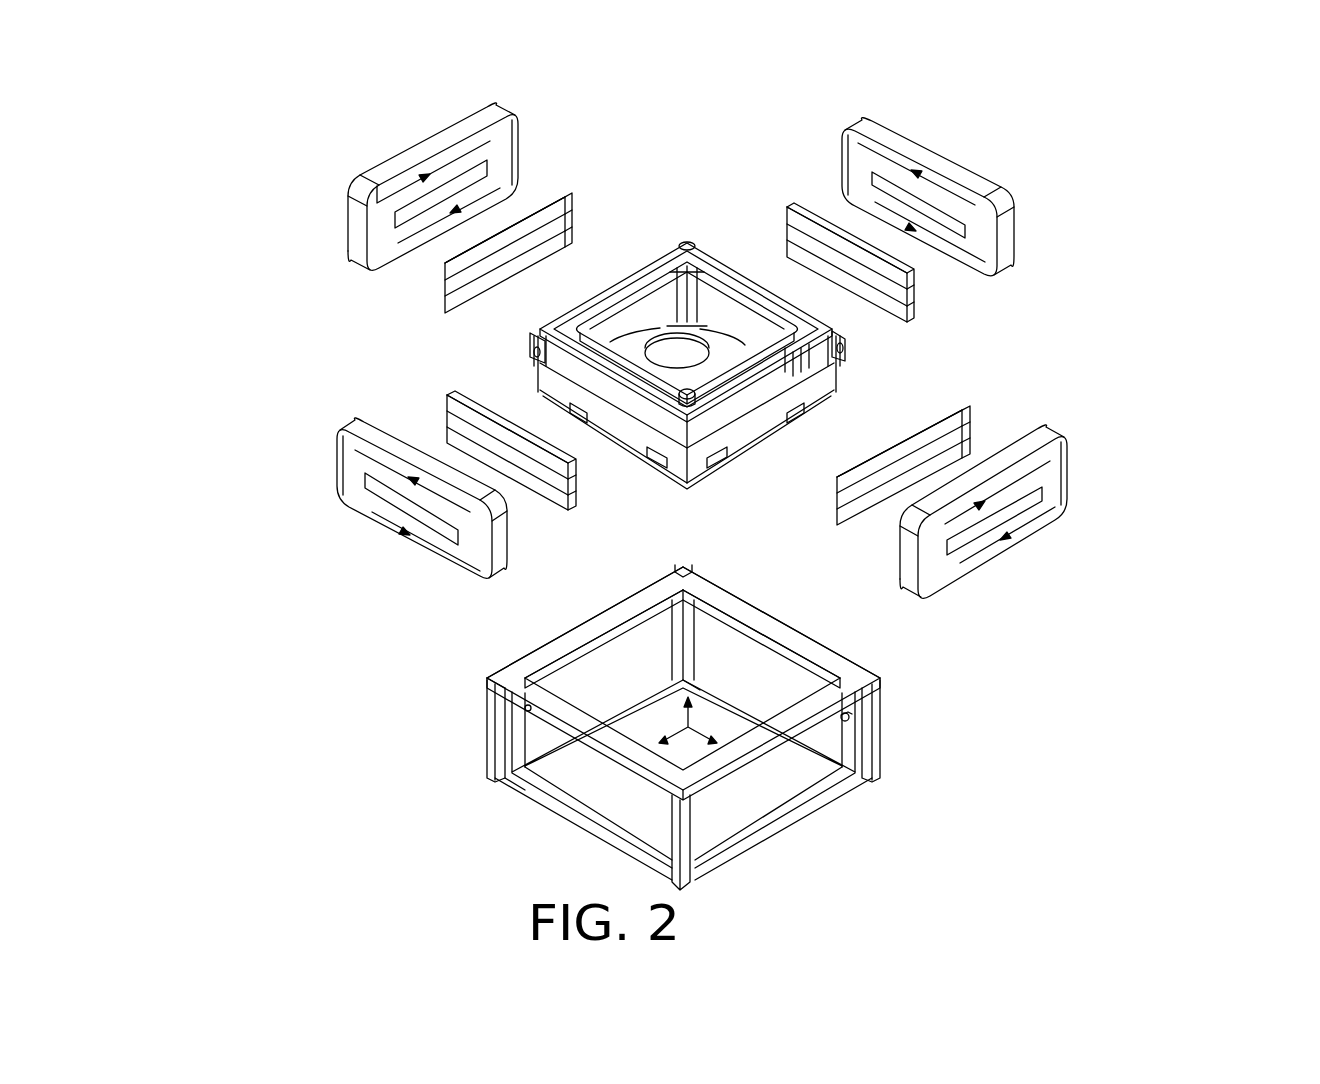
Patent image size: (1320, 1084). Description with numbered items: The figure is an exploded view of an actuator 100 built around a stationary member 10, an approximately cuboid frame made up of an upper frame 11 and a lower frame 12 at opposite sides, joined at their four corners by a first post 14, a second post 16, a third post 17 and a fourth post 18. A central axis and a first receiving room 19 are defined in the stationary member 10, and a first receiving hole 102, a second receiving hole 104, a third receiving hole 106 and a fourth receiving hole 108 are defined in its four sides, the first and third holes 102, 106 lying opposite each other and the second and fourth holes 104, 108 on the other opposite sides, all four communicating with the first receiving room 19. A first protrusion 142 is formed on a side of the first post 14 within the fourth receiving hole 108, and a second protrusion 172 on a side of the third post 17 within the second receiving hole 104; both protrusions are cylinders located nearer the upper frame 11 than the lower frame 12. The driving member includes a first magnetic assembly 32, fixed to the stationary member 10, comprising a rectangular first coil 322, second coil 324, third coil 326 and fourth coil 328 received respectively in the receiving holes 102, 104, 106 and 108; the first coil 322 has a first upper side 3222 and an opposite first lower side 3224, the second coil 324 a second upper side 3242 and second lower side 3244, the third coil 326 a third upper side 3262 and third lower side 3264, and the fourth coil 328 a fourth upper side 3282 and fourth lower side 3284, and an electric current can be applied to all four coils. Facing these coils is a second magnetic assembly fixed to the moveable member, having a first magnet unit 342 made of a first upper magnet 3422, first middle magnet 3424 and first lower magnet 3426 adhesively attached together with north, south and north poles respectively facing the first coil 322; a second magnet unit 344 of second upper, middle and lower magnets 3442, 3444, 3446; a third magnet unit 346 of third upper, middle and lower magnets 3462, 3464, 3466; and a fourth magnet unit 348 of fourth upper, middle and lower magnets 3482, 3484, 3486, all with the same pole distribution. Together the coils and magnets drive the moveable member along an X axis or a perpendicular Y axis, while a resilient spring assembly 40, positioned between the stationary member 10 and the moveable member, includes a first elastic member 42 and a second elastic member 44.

The actuator 100 is at (543, 78).
The stationary member 10 is at (600, 604).
The upper frame 11 is at (515, 678).
The lower frame 12 is at (528, 788).
The first post 14 is at (488, 728).
The second post 16 is at (690, 810).
The third post 17 is at (873, 762).
The fourth post 18 is at (695, 632).
The first receiving room 19 is at (718, 718).
The first receiving hole 102 is at (600, 803).
The second receiving hole 104 is at (803, 780).
The third receiving hole 106 is at (780, 678).
The fourth receiving hole 108 is at (603, 660).
The first protrusion 142 is at (524, 706).
The second protrusion 172 is at (852, 716).
The first magnetic assembly 32 is at (340, 160).
The first coil 322 is at (243, 545).
The first upper side 3222 is at (354, 450).
The first lower side 3224 is at (360, 508).
The second coil 324 is at (1198, 508).
The second upper side 3242 is at (1025, 468).
The second lower side 3244 is at (1033, 532).
The third coil 326 is at (1058, 130).
The third upper side 3262 is at (945, 190).
The third lower side 3264 is at (948, 240).
The fourth coil 328 is at (232, 188).
The fourth upper side 3282 is at (360, 203).
The fourth lower side 3284 is at (358, 268).
The first magnet unit 342 is at (695, 490).
The first upper magnet 3422 is at (560, 485).
The first middle magnet 3424 is at (562, 500).
The first lower magnet 3426 is at (565, 515).
The second magnet unit 344 is at (1118, 325).
The second upper magnet 3442 is at (963, 418).
The second middle magnet 3444 is at (963, 438).
The second lower magnet 3446 is at (963, 455).
The third magnet unit 346 is at (670, 122).
The third upper magnet 3462 is at (790, 212).
The third middle magnet 3464 is at (790, 232).
The third lower magnet 3466 is at (889, 247).
The fourth magnet unit 348 is at (318, 288).
The fourth upper magnet 3482 is at (446, 284).
The fourth middle magnet 3484 is at (452, 310).
The fourth lower magnet 3486 is at (440, 300).
The spring assembly 40 is at (929, 348).
The first elastic member 42 is at (838, 382).
The second elastic member 44 is at (846, 366).